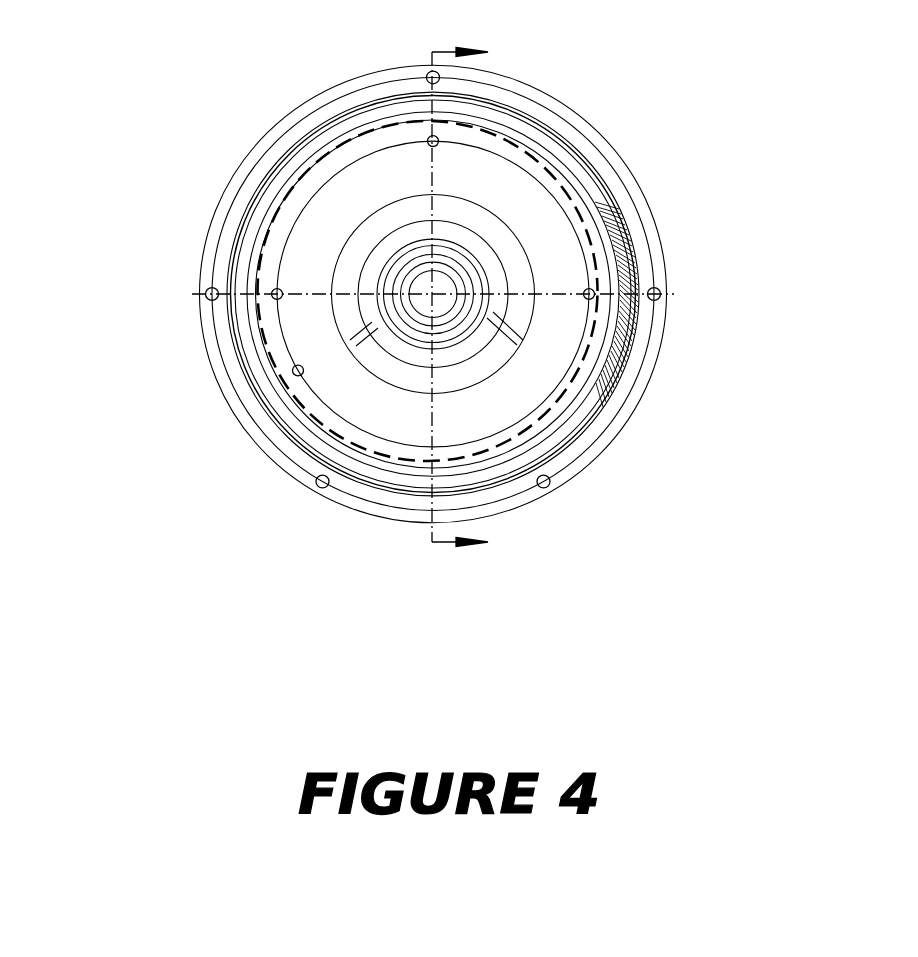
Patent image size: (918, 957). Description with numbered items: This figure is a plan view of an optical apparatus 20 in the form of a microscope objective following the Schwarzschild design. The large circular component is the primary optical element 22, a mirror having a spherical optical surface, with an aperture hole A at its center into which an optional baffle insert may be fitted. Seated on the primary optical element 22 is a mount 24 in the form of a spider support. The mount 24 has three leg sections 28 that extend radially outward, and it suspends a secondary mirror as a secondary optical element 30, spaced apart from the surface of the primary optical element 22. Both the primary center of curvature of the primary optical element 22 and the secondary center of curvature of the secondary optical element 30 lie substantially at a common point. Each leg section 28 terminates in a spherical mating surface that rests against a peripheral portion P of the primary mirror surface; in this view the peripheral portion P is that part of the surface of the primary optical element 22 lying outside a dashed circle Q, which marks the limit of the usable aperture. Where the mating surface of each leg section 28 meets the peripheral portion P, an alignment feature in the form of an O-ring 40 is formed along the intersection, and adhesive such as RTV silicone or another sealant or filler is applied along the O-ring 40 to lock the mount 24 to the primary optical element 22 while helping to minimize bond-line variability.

The optical apparatus 20 is at (798, 214).
The primary optical element 22 is at (257, 131).
The mount 24 is at (347, 345).
The leg sections 28 is at (423, 232).
The secondary optical element 30 is at (448, 280).
The O-ring 40 is at (622, 363).
The peripheral portion P is at (600, 428).
The dashed circle Q is at (267, 225).
The aperture hole A is at (509, 289).